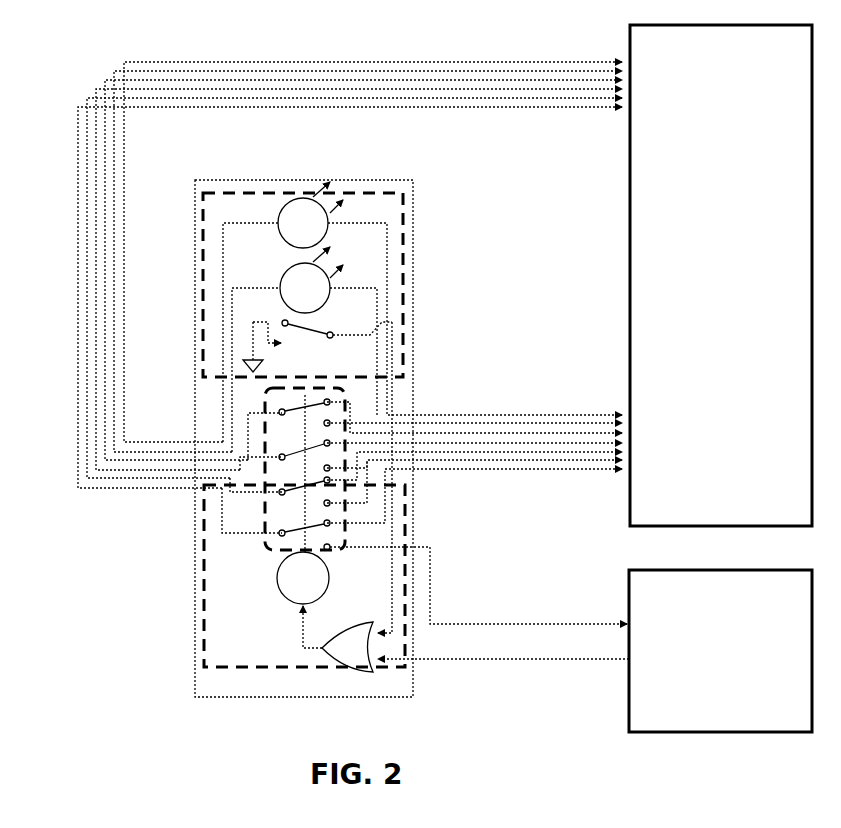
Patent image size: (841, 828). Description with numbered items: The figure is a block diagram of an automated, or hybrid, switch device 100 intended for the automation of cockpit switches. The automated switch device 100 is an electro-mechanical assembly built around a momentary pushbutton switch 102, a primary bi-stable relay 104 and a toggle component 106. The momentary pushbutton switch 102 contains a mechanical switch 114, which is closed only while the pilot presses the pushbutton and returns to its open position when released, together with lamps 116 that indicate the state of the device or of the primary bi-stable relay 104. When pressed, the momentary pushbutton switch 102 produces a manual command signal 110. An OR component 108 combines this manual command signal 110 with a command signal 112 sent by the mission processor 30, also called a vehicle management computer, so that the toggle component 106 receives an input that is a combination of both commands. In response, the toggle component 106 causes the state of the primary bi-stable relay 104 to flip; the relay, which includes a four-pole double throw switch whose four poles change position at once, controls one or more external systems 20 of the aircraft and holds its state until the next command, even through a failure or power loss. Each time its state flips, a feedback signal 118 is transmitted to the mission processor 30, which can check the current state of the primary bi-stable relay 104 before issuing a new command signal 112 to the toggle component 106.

The systems of the aircraft 20 is at (721, 275).
The mission processor 30 is at (720, 651).
The automated switch device 100 is at (400, 180).
The momentary pushbutton switch 102 is at (226, 191).
The primary bi-stable relay 104 is at (266, 412).
The toggle component 106 is at (277, 578).
The OR component 108 is at (345, 668).
The manual command signal 110 is at (405, 498).
The command signal 112 is at (482, 661).
The mechanical switch 114 is at (360, 330).
The lamps 116 is at (290, 198).
The feedback signal 118 is at (562, 624).